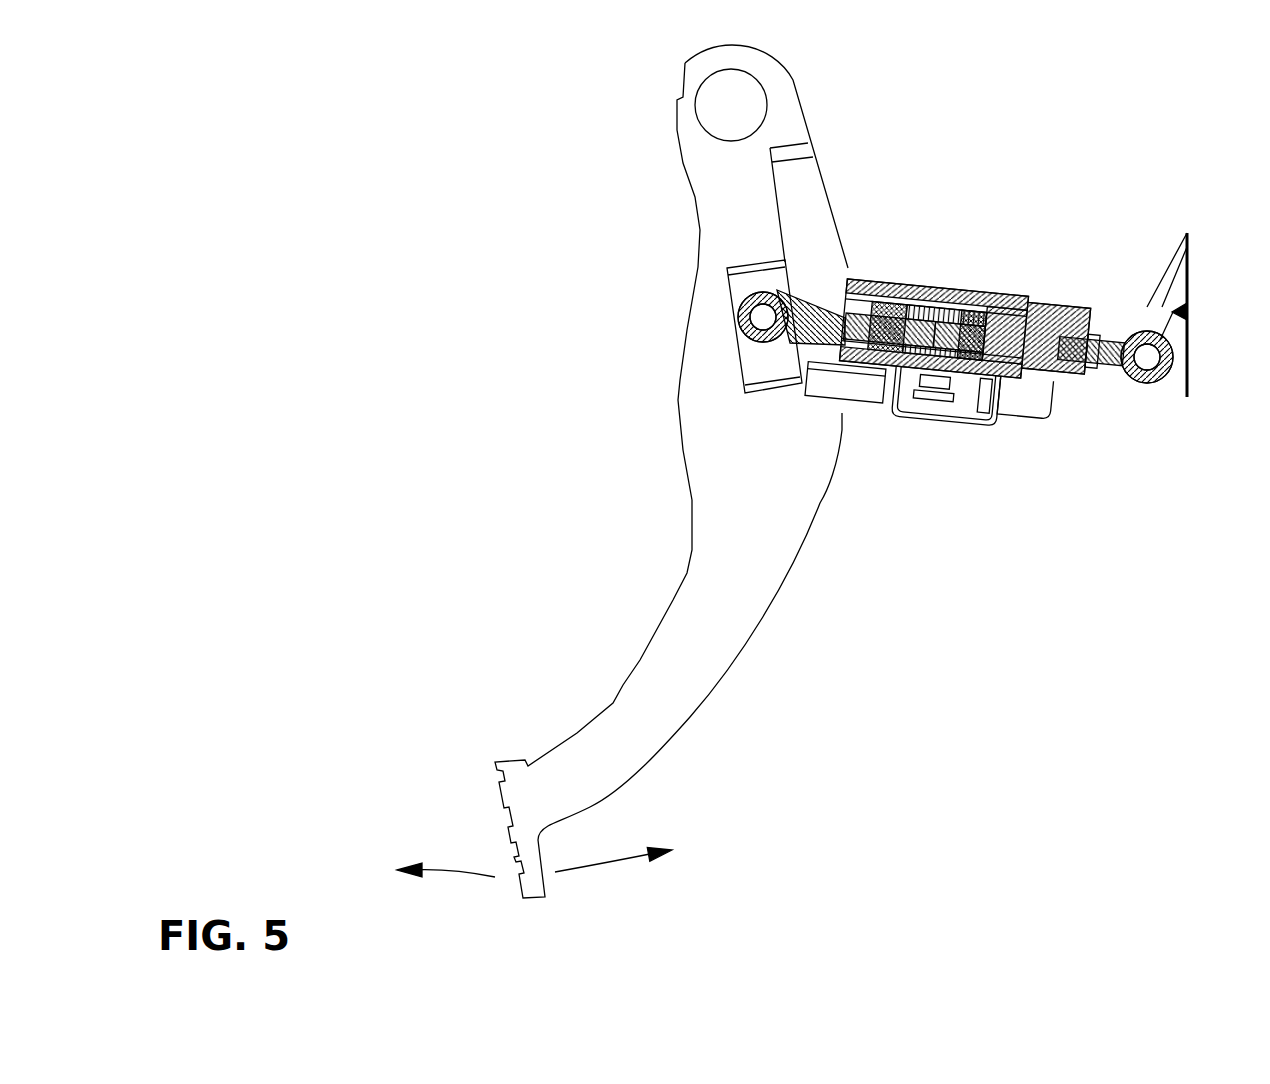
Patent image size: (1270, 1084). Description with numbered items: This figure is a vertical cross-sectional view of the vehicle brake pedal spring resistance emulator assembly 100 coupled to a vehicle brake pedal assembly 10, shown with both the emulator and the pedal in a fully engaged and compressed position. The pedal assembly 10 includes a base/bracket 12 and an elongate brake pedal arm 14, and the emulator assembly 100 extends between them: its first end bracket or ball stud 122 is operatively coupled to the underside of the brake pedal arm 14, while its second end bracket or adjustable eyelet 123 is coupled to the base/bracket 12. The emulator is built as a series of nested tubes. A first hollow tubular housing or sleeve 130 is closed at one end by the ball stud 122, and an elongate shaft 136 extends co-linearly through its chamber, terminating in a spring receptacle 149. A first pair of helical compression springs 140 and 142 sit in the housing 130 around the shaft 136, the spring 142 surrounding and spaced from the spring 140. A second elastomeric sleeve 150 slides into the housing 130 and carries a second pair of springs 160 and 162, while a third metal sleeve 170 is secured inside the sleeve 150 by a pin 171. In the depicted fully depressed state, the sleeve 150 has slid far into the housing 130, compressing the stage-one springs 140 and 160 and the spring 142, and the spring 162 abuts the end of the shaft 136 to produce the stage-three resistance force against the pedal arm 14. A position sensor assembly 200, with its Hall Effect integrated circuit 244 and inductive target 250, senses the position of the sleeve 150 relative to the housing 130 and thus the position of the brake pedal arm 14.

The vehicle brake pedal assembly 10 is at (624, 471).
The base/bracket 12 is at (1178, 293).
The brake pedal arm 14 is at (692, 620).
The vehicle brake pedal spring resistance emulator assembly 100 is at (992, 183).
The first end bracket or ball stud 122 is at (1130, 390).
The second end bracket or adjustable eyelet 123 is at (758, 315).
The housing or sleeve 130 is at (1015, 293).
The shaft 136 is at (1023, 420).
The helical elongate compression spring 140 is at (1055, 305).
The helical elongate compression spring 142 is at (1047, 297).
The spring receptacle 149 is at (940, 400).
The sleeve 150 is at (829, 286).
The helical elongate compression spring 160 is at (862, 300).
The helical elongate compression spring 162 is at (842, 407).
The sleeve 170 is at (986, 305).
The pin 171 is at (967, 305).
The position sensor assembly 200 is at (968, 410).
The Hall Effect integrated circuit 244 is at (938, 407).
The inductive target 250 is at (1000, 400).